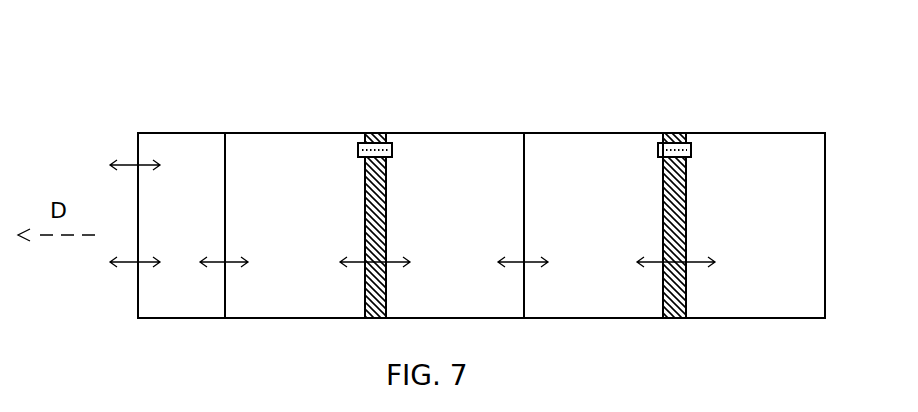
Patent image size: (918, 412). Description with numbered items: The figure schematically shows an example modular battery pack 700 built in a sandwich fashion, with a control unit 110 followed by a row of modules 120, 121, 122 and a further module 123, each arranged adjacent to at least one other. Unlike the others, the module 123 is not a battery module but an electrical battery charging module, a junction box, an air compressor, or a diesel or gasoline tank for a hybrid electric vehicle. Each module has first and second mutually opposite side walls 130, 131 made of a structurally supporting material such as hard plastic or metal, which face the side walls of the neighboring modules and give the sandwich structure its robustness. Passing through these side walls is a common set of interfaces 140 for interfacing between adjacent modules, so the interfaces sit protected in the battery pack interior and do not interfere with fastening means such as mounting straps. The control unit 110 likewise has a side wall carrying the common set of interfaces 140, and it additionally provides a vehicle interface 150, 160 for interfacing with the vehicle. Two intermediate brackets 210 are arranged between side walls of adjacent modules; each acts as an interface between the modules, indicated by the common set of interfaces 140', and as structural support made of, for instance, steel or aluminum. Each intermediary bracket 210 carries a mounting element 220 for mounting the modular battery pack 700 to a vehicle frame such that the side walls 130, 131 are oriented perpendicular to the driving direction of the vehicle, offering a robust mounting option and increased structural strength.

The modular battery pack 700 is at (118, 89).
The control unit 110 is at (204, 234).
The module 120 is at (317, 234).
The module 121 is at (477, 233).
The module 122 is at (617, 232).
The module 123 is at (785, 232).
The first side wall 130 is at (661, 192).
The second side wall 131 is at (528, 192).
The common set of interfaces 140 is at (363, 280).
The common set of interfaces 140' is at (515, 280).
The vehicle interface 150 is at (124, 177).
The vehicle interface 160 is at (125, 280).
The intermediary bracket 210 is at (387, 184).
The mounting element 220 is at (384, 134).